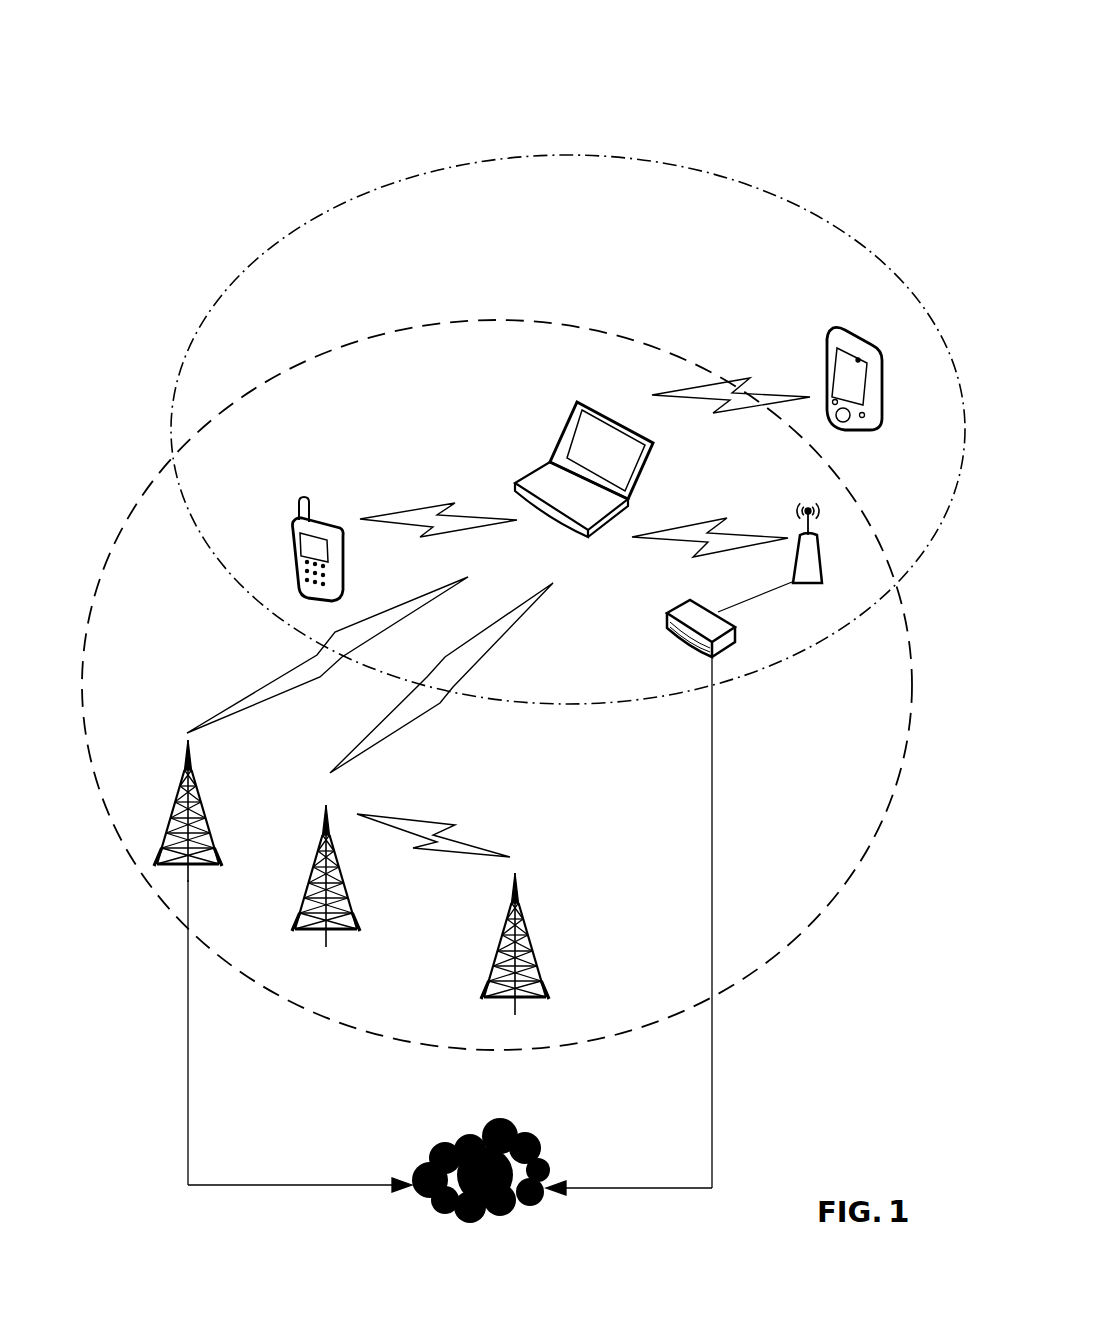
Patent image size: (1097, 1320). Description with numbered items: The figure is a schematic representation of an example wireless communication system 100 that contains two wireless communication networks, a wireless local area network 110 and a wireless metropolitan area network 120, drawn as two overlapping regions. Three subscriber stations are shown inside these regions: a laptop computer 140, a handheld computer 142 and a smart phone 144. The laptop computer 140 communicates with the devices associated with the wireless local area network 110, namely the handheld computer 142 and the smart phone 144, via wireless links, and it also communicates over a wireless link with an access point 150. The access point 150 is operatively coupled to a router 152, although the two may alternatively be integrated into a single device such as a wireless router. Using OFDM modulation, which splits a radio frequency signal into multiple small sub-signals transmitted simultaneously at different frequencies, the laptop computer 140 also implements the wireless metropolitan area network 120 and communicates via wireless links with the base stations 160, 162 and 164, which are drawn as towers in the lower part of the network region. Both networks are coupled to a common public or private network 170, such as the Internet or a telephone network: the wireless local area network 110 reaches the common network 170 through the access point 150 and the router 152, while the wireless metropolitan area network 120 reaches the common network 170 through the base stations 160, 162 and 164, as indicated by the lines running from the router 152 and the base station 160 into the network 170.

The wireless communication system 100 is at (140, 92).
The wireless local area network (WLAN) 110 is at (440, 170).
The wireless metropolitan area network (WMAN) 120 is at (836, 897).
The laptop computer 140 is at (580, 400).
The handheld computer 142 is at (826, 330).
The smart phone 144 is at (320, 514).
The access point (AP) 150 is at (820, 563).
The router 152 is at (667, 638).
The base station 160 is at (202, 807).
The base station 162 is at (352, 905).
The base station 164 is at (530, 945).
The common public or private network 170 is at (428, 1153).